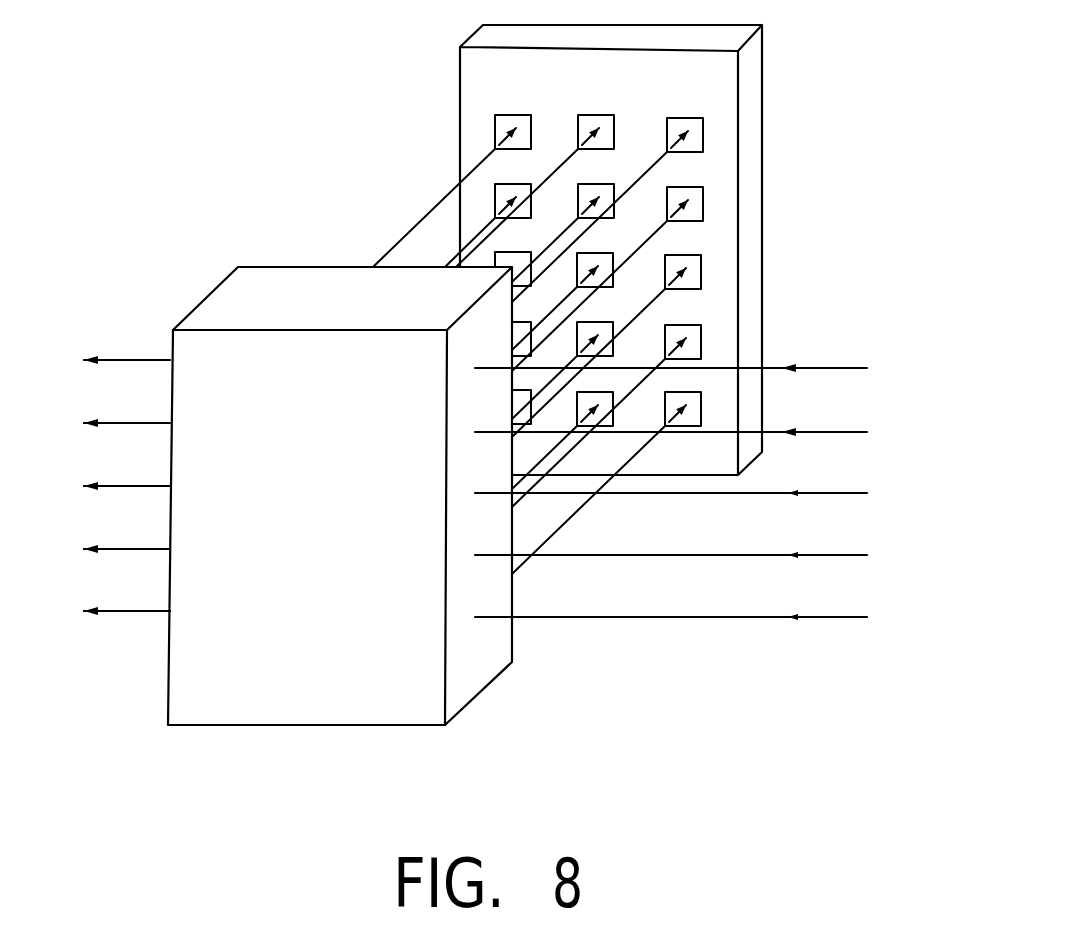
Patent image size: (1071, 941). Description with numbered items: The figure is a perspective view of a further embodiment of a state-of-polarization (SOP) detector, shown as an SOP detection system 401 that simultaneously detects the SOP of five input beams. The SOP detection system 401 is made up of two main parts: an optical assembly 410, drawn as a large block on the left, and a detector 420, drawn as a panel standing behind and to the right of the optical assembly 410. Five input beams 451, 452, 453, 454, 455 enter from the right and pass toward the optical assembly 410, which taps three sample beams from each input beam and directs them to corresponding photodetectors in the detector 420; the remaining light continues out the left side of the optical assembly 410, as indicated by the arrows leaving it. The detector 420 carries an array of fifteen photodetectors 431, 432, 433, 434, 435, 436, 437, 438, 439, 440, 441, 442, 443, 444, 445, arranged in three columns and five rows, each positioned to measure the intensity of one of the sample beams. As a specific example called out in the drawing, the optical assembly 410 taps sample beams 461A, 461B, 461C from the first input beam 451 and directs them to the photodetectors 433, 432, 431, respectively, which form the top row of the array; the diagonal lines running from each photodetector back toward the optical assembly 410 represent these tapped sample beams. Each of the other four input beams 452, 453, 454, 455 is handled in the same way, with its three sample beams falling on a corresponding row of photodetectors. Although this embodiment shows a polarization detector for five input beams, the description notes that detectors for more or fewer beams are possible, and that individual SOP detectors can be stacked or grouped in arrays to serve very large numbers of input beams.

The SOP detection system 401 is at (322, 161).
The optical assembly 410 is at (312, 386).
The detector 420 is at (752, 67).
The photodetector 431 is at (507, 114).
The photodetector 432 is at (593, 114).
The photodetector 433 is at (678, 117).
The photodetector 434 is at (507, 184).
The photodetector 435 is at (583, 185).
The photodetector 436 is at (678, 188).
The photodetector 437 is at (510, 252).
The photodetector 438 is at (600, 253).
The photodetector 439 is at (685, 255).
The photodetector 440 is at (522, 321).
The photodetector 441 is at (600, 322).
The photodetector 442 is at (682, 325).
The photodetector 443 is at (520, 390).
The photodetector 444 is at (609, 425).
The photodetector 445 is at (699, 426).
The input beam 451 is at (817, 366).
The input beam 452 is at (828, 422).
The input beam 453 is at (829, 484).
The input beam 454 is at (836, 546).
The input beam 455 is at (838, 608).
The sample beam 461A is at (652, 163).
The sample beam 461B is at (565, 157).
The sample beam 461C is at (420, 218).